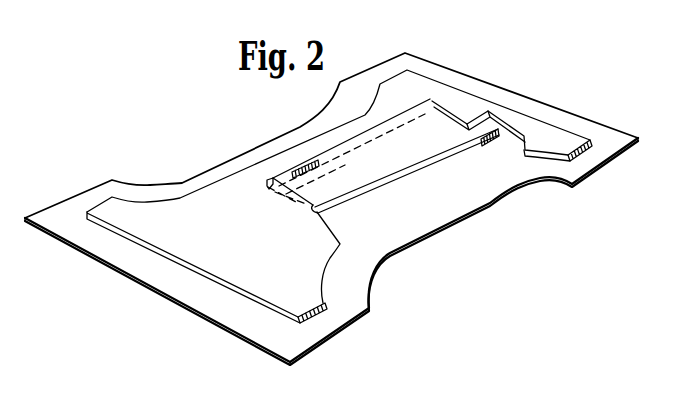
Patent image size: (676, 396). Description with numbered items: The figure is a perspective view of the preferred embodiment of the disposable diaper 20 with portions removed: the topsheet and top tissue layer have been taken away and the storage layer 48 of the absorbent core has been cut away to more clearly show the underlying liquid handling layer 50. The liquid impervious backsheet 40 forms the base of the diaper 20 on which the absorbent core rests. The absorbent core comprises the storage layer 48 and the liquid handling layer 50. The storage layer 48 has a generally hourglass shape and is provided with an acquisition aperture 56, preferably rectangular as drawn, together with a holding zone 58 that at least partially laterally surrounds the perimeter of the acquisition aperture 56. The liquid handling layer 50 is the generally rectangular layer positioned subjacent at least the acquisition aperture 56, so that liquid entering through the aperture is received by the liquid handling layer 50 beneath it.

The diaper 20 is at (227, 146).
The backsheet 40 is at (138, 262).
The storage layer 48 is at (274, 281).
The liquid handling layer 50 is at (375, 183).
The acquisition aperture 56 is at (431, 129).
The holding zone 58 is at (229, 230).